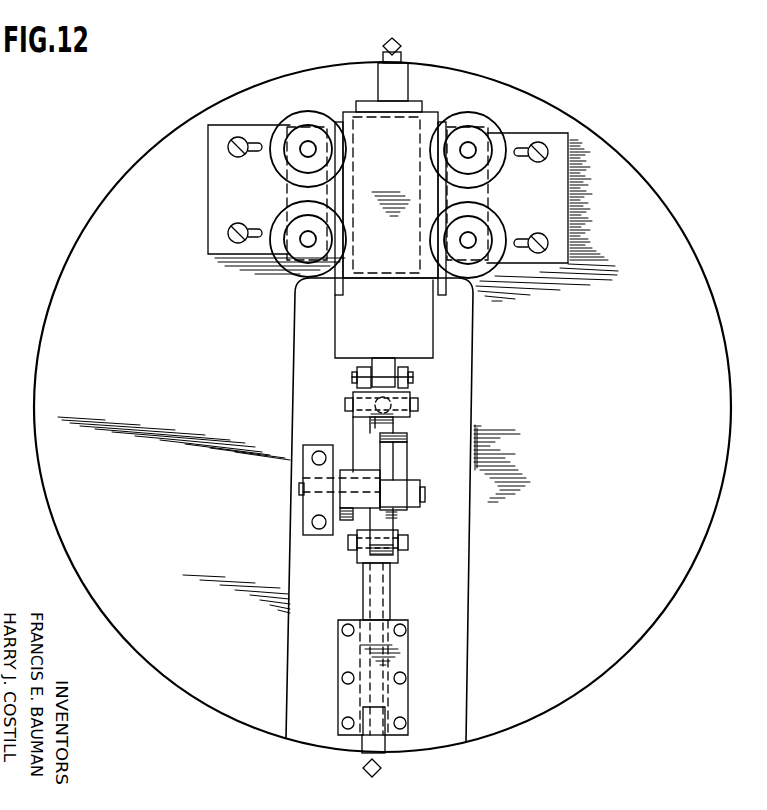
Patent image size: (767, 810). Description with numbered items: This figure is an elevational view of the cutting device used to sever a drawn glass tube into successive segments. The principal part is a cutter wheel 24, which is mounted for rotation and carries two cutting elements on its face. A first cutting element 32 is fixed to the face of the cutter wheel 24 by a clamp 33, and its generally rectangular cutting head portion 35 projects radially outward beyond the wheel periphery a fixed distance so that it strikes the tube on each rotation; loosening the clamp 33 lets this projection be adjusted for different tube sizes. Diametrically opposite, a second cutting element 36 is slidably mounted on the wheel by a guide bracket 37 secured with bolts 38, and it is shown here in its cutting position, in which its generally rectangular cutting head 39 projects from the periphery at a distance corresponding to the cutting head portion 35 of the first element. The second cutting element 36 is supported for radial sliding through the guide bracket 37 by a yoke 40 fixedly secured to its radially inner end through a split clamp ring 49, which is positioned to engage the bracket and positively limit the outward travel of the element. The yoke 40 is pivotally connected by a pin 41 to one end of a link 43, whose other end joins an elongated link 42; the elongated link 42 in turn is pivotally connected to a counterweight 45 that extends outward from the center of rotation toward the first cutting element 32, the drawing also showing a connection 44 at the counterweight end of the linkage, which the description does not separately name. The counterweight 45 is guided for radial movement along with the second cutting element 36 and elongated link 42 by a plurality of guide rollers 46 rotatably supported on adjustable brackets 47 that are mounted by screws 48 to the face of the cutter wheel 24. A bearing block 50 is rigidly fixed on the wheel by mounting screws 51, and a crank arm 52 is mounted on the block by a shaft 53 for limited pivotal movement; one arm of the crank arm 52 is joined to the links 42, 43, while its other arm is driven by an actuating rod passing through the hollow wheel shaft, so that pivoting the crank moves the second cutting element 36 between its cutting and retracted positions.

The cutter wheel 24 is at (727, 468).
The first cutting element 32 is at (404, 56).
The clamp 33 is at (368, 103).
The cutting head portion 35 is at (382, 43).
The second cutting element 36 is at (379, 753).
The guide bracket 37 is at (405, 660).
The bolts 38 is at (406, 630).
The cutting head 39 is at (362, 768).
The yoke 40 is at (394, 557).
The pin 41 is at (410, 537).
The elongated link 42 is at (398, 462).
The link 43 is at (380, 527).
The pivot bolt 44 is at (412, 377).
The counterweight 45 is at (425, 333).
The guide rollers 46 is at (312, 112).
The adjustable brackets 47 is at (218, 181).
The screws 48 is at (240, 137).
The split clamp ring 49 is at (388, 590).
The bearing block 50 is at (305, 510).
The mounting screws 51 is at (306, 458).
The crank arm 52 is at (345, 522).
The shaft 53 is at (300, 490).